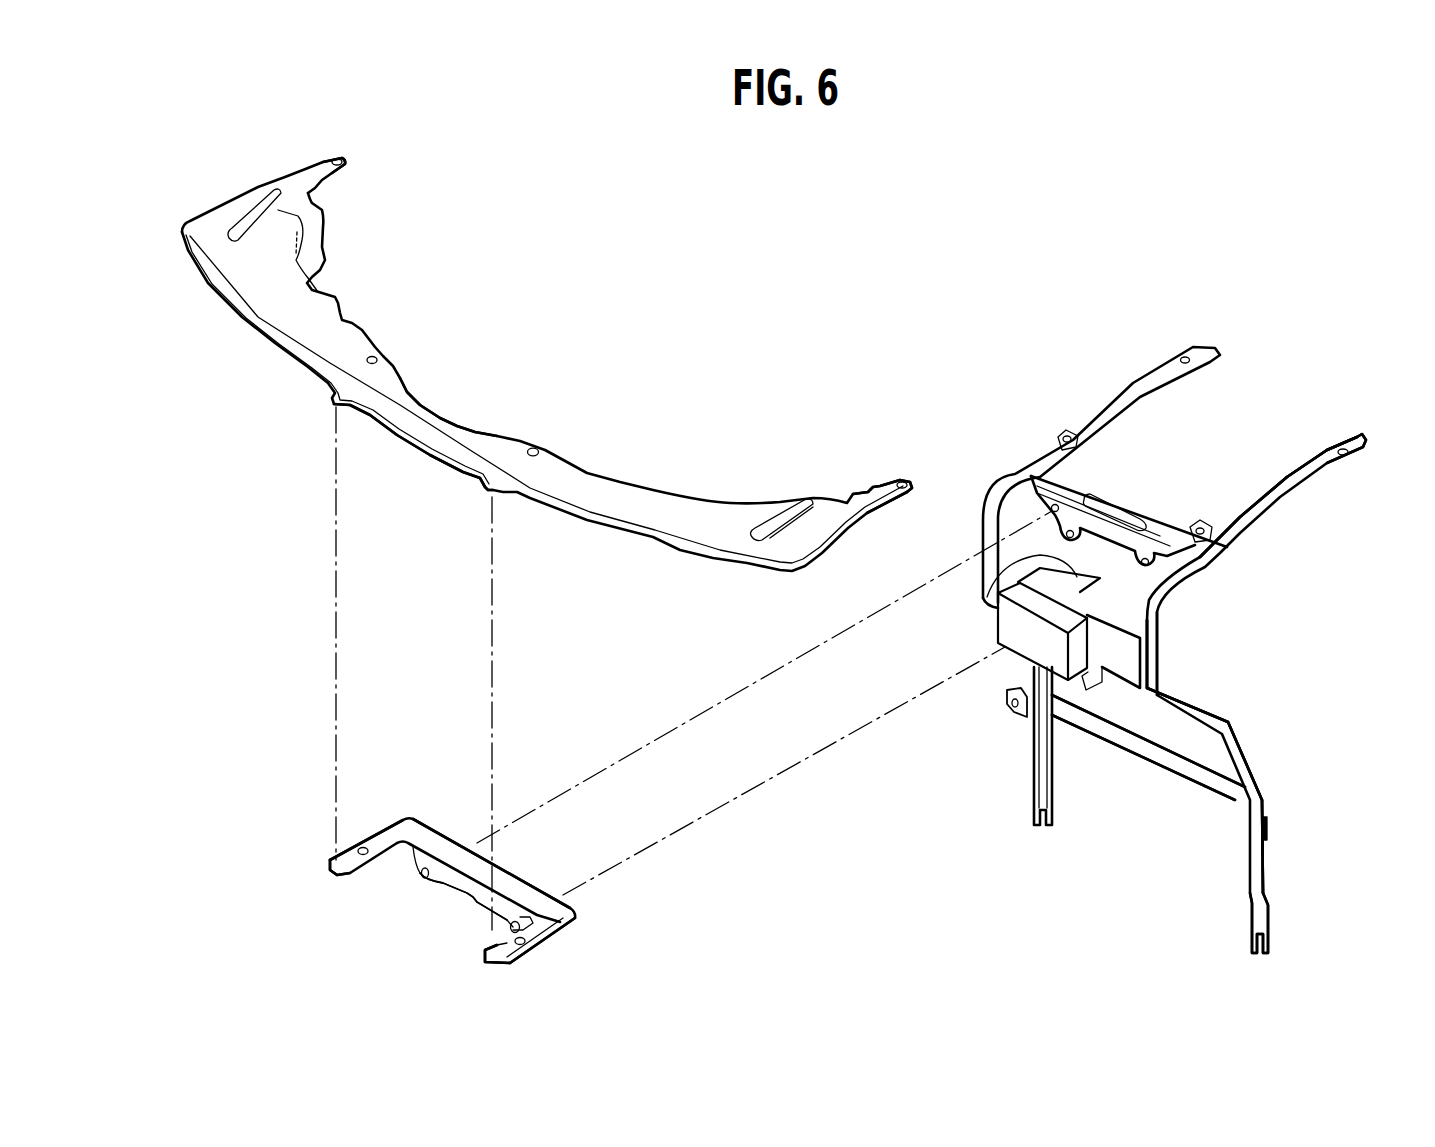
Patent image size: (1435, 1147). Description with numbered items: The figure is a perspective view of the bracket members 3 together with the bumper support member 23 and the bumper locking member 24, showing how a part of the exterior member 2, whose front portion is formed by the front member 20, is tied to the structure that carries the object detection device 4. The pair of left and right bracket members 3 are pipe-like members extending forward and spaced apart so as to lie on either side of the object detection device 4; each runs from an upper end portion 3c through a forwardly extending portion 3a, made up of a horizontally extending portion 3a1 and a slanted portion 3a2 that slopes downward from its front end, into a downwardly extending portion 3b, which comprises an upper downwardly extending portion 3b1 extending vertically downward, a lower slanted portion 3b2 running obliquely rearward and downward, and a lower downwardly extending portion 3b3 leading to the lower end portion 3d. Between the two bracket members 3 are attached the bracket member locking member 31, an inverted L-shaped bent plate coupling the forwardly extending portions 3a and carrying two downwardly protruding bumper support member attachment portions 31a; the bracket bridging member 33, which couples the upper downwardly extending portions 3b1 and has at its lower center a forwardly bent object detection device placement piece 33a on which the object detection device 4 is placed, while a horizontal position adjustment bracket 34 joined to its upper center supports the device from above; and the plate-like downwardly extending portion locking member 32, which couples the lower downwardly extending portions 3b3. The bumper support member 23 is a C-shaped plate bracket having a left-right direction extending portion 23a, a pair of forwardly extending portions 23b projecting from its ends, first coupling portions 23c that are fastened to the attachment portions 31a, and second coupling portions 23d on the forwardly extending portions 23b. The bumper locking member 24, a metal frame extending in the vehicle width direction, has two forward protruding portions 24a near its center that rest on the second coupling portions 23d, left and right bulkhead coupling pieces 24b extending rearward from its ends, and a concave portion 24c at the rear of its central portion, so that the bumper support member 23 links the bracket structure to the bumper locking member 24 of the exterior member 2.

The exterior member 2 is at (317, 829).
The front member 20 is at (225, 543).
The bumper locking member 24 is at (210, 197).
The protruding portions 24a is at (340, 408).
The bulkhead coupling pieces 24b is at (325, 160).
The concave portion 24c is at (453, 426).
The bumper support member 23 is at (588, 920).
The left-right direction extending portion 23a is at (510, 880).
The forwardly extending portions 23b is at (363, 833).
The first coupling portions 23c is at (510, 927).
The second coupling portions 23d is at (330, 860).
The bracket members 3 is at (1125, 366).
The forwardly extending portion 3a is at (1285, 600).
The horizontally extending portion 3a1 is at (1330, 467).
The slanted portion 3a2 is at (1253, 523).
The downwardly extending portion 3b is at (1352, 637).
The upper downwardly extending portion 3b1 is at (1160, 622).
The lower slanted portion 3b2 is at (1203, 700).
The lower downwardly extending portion 3b3 is at (1268, 850).
The upper end portion 3c is at (1349, 436).
The lower end portion 3d is at (1271, 943).
The bracket member locking member 31 is at (1115, 504).
The bumper support member attachment portions 31a is at (1144, 558).
The downwardly extending portion locking member 32 is at (1148, 780).
The bracket bridging member 33 is at (1153, 673).
The object detection device placement piece 33a is at (1097, 679).
The position adjustment bracket 34 is at (987, 597).
The object detection device 4 is at (1007, 690).